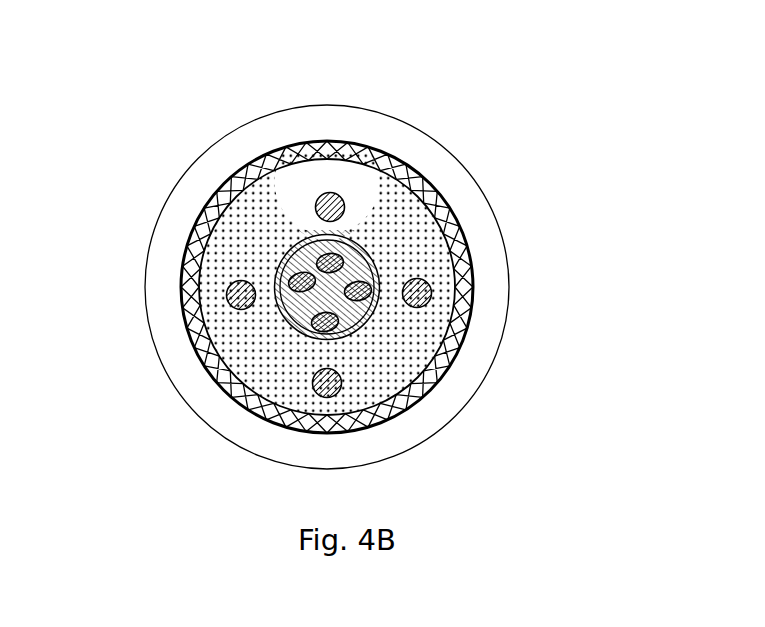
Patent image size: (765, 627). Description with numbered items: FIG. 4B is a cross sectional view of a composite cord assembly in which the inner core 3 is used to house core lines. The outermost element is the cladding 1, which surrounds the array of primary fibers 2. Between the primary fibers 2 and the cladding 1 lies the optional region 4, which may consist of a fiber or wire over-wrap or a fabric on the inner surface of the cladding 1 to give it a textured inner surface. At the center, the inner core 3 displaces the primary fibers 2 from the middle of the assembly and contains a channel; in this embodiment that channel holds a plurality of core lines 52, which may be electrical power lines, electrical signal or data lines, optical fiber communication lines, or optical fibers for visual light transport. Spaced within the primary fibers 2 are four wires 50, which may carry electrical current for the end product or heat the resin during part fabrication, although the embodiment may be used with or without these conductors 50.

The cladding 1 is at (463, 172).
The primary fibers 2 is at (390, 350).
The inner core 3 is at (293, 248).
The region 4 is at (275, 157).
The wires 50 is at (329, 197).
The core lines 52 is at (362, 285).